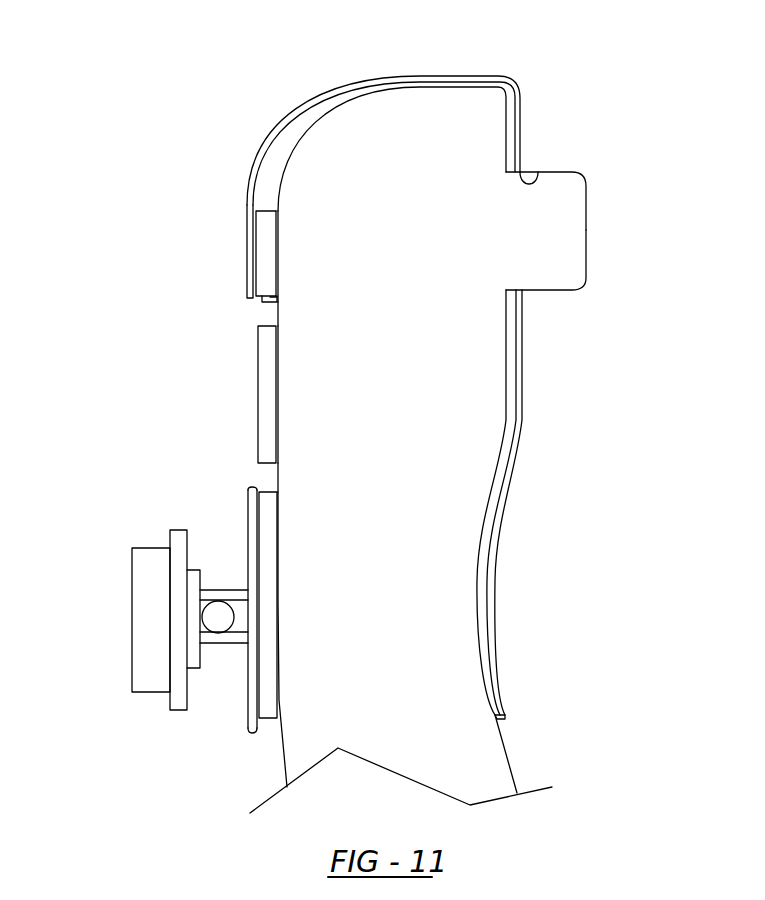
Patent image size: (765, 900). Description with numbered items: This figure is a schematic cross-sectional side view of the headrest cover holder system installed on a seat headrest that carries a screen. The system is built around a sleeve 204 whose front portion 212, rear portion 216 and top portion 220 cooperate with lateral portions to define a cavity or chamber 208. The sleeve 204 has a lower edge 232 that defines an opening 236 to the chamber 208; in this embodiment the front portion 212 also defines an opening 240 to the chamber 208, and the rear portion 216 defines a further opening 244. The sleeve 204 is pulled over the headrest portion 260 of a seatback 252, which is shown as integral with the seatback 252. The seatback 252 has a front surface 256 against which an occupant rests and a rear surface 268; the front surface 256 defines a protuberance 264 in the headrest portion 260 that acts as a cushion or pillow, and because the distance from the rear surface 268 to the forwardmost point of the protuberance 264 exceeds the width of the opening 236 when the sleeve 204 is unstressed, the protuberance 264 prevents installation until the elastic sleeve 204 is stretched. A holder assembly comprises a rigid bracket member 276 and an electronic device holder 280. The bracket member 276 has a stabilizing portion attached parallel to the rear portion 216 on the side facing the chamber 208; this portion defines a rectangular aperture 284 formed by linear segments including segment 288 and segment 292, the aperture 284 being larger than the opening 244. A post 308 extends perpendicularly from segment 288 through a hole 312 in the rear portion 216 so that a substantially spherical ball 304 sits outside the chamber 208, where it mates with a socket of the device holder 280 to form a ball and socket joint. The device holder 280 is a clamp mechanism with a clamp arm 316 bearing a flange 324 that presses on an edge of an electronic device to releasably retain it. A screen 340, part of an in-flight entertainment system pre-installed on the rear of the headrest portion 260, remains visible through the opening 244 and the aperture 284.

The sleeve 204 is at (260, 152).
The cavity or chamber 208 is at (386, 340).
The front portion 212 is at (523, 402).
The rear portion 216 is at (247, 258).
The top portion 220 is at (410, 76).
The lower edge 232 is at (503, 718).
The opening 236 is at (428, 728).
The opening 240 is at (538, 172).
The opening 244 is at (277, 297).
The seatback 252 is at (490, 767).
The front surface 256 is at (493, 483).
The headrest portion 260 is at (462, 98).
The protuberance 264 is at (586, 248).
The rear surface 268 is at (276, 312).
The bracket member 276 is at (270, 252).
The electronic device holder 280 is at (175, 712).
The aperture 284 is at (284, 299).
The linear segment 288 is at (267, 587).
The linear segment 292 is at (276, 228).
The ball 304 is at (216, 622).
The post 308 is at (242, 597).
The hole 312 is at (254, 620).
The clamp arm 316 is at (176, 546).
The flange 324 is at (148, 662).
The screen 340 is at (262, 395).